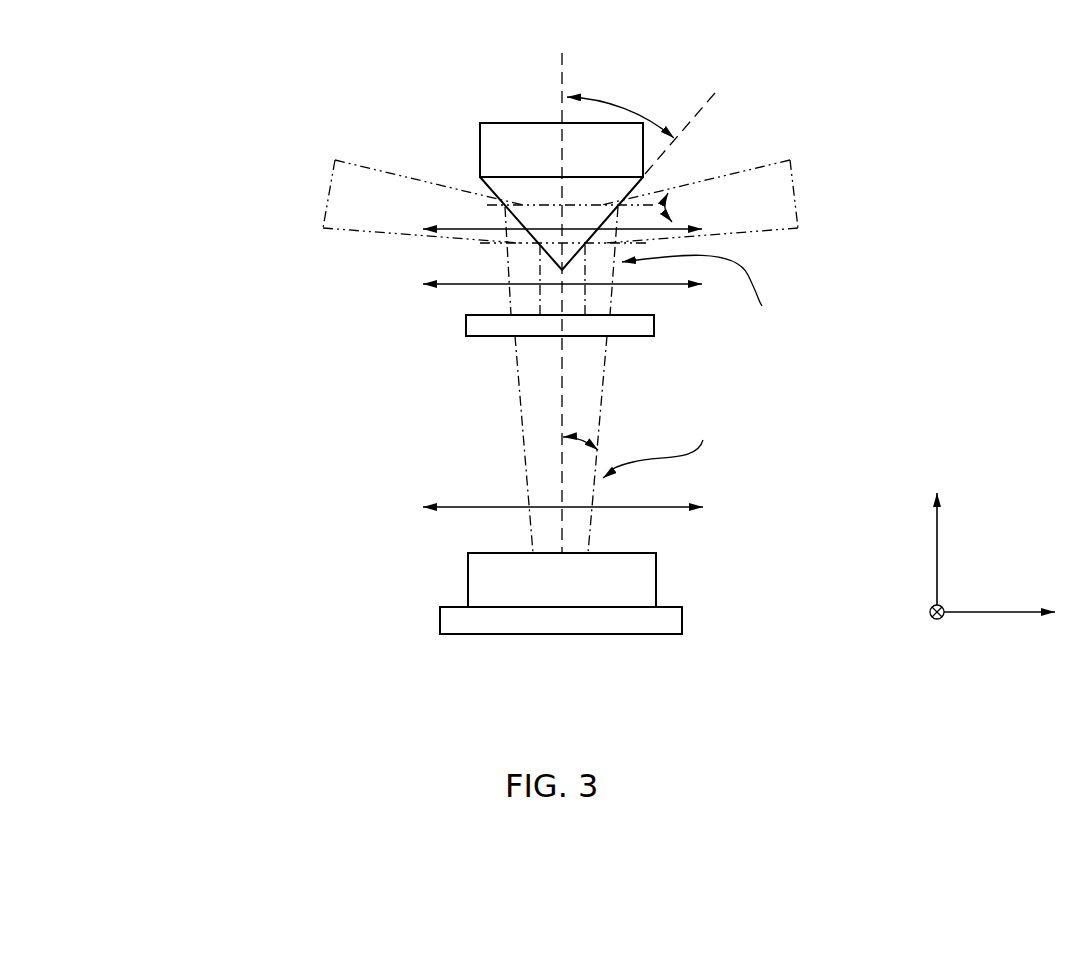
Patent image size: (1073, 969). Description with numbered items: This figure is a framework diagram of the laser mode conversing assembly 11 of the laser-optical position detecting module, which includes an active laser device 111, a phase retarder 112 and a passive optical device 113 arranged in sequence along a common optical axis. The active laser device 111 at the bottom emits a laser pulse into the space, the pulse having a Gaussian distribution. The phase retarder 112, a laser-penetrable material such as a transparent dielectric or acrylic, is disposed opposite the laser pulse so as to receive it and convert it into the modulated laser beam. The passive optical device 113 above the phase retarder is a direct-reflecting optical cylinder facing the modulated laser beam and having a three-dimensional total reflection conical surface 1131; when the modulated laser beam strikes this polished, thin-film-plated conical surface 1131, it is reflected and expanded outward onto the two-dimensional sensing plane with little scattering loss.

The laser mode conversing assembly 11 is at (210, 52).
The active laser device 111 is at (468, 573).
The phase retarder 112 is at (466, 335).
The passive optical device 113 is at (480, 167).
The three-dimensional total reflection conical surface 1131 is at (486, 188).